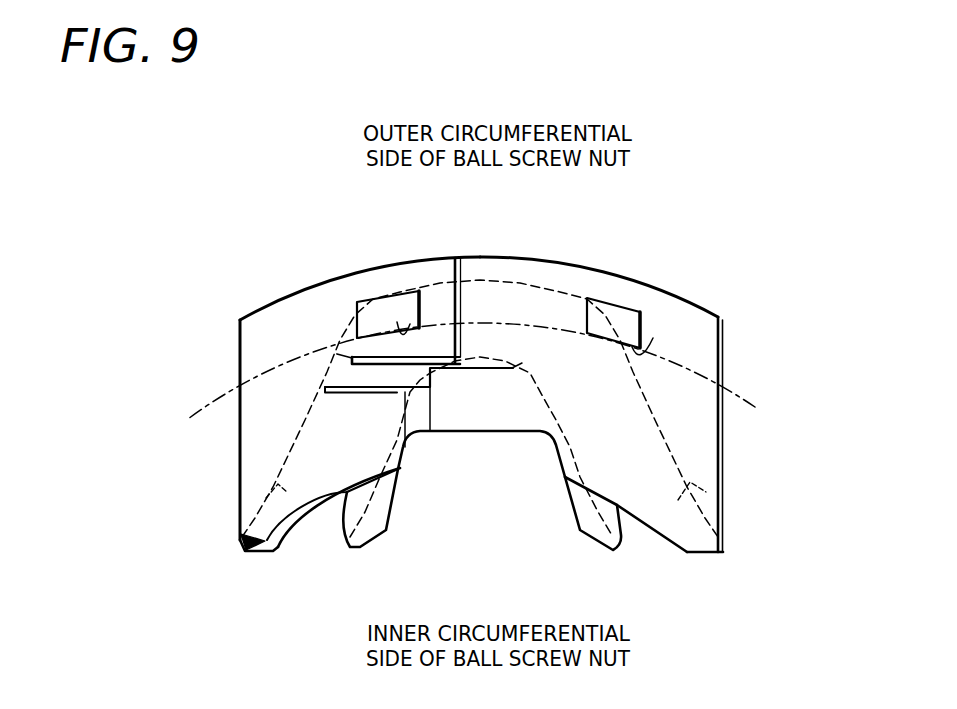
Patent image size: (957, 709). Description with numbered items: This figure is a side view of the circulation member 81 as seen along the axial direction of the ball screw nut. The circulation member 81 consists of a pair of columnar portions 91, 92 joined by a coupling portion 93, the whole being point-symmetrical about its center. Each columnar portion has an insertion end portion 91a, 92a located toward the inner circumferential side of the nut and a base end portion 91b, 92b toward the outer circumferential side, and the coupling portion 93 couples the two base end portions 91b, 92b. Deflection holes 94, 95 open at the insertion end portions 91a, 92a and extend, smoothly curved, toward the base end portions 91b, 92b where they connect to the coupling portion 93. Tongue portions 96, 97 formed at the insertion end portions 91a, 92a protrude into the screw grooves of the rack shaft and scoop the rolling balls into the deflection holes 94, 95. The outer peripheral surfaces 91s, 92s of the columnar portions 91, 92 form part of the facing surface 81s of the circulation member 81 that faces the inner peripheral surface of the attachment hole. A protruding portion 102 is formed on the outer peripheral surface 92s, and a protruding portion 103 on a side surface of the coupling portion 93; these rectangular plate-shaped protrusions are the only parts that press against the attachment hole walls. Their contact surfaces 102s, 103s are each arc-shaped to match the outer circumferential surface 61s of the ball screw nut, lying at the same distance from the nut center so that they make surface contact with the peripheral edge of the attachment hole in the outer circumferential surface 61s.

The circulation member 81 is at (177, 238).
The facing surface 81s is at (505, 432).
The columnar portion 91 is at (240, 433).
The insertion end portion 91a is at (247, 515).
The base end portion 91b is at (266, 314).
The outer peripheral surface 91s is at (250, 333).
The columnar portion 92 is at (723, 437).
The insertion end portion 92a is at (718, 535).
The base end portion 92b is at (725, 323).
The outer peripheral surface 92s is at (718, 353).
The coupling portion 93 is at (447, 257).
The deflection hole 94 is at (268, 495).
The deflection hole 95 is at (708, 489).
The tongue portion 96 is at (372, 528).
The tongue portion 97 is at (600, 532).
The protruding portion 102 is at (613, 304).
The contact surface 102s is at (651, 348).
The protruding portion 103 is at (370, 305).
The contact surface 103s is at (400, 322).
The outer circumferential surface 61s is at (767, 408).